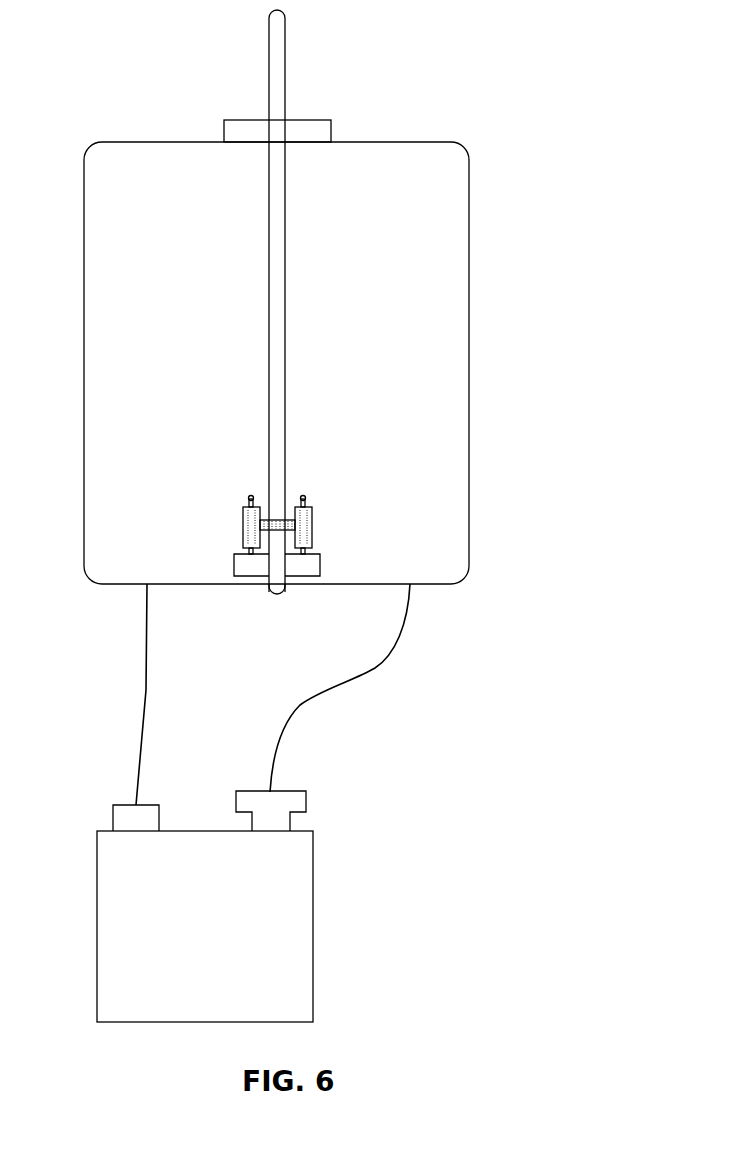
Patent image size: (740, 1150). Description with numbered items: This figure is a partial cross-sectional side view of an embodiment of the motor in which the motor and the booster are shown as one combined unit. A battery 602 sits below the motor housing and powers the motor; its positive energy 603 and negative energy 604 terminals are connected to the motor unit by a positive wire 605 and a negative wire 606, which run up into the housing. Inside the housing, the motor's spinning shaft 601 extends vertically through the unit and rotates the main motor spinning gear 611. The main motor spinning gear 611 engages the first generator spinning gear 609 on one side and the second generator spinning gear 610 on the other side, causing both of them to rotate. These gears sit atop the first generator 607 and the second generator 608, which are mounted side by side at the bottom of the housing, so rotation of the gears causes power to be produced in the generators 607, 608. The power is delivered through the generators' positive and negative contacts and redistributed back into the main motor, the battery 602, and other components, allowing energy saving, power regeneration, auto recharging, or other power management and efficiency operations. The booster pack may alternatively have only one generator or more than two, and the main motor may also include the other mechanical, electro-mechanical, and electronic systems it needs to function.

The shaft 601 is at (270, 80).
The battery 602 is at (115, 930).
The positive energy 603 is at (112, 818).
The negative energy 604 is at (307, 802).
The positive wire 605 is at (143, 646).
The negative wire 606 is at (405, 625).
The generator 1 607 is at (240, 566).
The generator 2 608 is at (313, 566).
The generator 1 spinning gear 609 is at (243, 524).
The generator 2 spinning gear 610 is at (318, 524).
The main motor spinning gear 611 is at (270, 520).